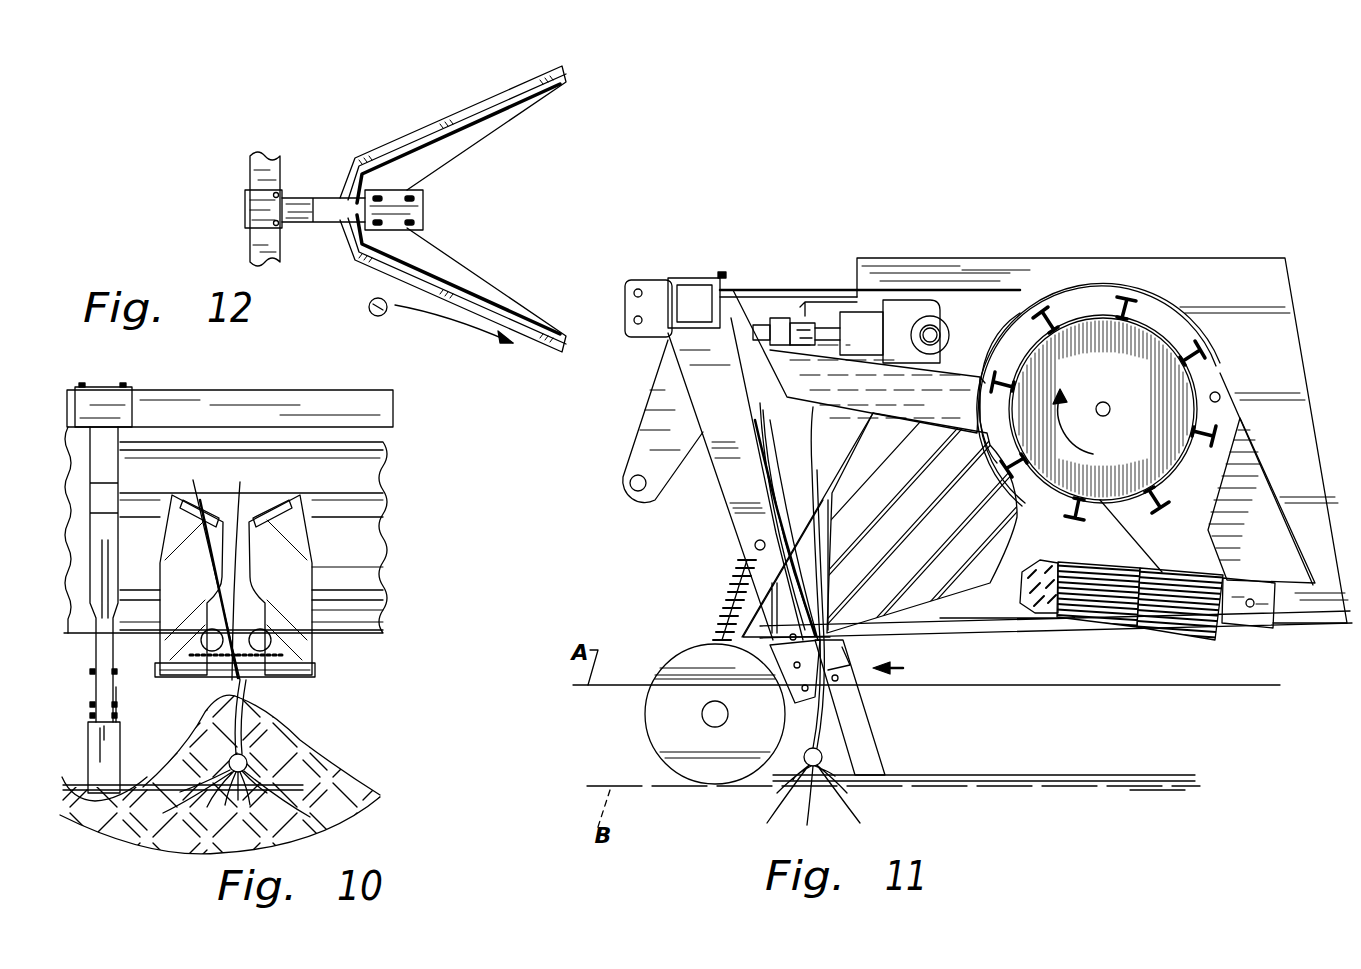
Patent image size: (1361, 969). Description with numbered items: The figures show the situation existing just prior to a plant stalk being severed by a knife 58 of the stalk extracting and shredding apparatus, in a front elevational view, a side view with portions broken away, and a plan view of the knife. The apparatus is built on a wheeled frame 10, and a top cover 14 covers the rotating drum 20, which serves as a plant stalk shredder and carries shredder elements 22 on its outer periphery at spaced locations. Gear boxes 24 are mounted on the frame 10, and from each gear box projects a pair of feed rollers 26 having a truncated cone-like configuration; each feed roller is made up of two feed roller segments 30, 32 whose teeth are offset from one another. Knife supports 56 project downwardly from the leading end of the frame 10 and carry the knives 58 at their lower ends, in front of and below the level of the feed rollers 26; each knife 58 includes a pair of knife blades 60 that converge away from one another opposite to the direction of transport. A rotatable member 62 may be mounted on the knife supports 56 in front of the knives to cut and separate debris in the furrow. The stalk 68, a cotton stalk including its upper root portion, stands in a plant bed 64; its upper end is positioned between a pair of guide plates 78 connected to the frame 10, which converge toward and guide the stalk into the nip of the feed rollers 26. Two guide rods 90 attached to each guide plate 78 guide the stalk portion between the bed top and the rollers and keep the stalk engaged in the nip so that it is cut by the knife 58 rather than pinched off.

In FIG. 12, the wheeled frame 10 is at (262, 175).
In FIG. 10, the wheeled frame 10 is at (250, 392).
In FIG. 11, the wheeled frame 10 is at (682, 300).
In FIG. 11, the top cover 14 is at (1172, 292).
In FIG. 11, the rotating drum 20 is at (1091, 320).
In FIG. 11, the shredder elements 22 is at (1050, 318).
In FIG. 11, the gear box 24 is at (1262, 614).
In FIG. 10, the feed rollers 26 is at (202, 665).
In FIG. 11, the feed rollers 26 is at (1087, 565).
In FIG. 11, the feed roller segment 30 is at (1090, 610).
In FIG. 11, the feed roller segment 32 is at (1167, 506).
In FIG. 12, the knife support 56 is at (405, 232).
In FIG. 10, the knife support 56 is at (100, 682).
In FIG. 11, the knife support 56 is at (832, 643).
In FIG. 10, the knife 58 is at (148, 800).
In FIG. 11, the knife 58 is at (1030, 775).
In FIG. 12, the knife blades 60 is at (522, 82).
In FIG. 11, the knife blades 60 is at (1128, 792).
In FIG. 11, the rotatable member 62 is at (700, 658).
In FIG. 10, the plant bed 64 is at (262, 726).
In FIG. 12, the stalk 68 is at (369, 305).
In FIG. 10, the stalk 68 is at (250, 745).
In FIG. 11, the stalk 68 is at (822, 728).
In FIG. 10, the guide plates 78 is at (185, 570).
In FIG. 11, the guide plates 78 is at (977, 548).
In FIG. 11, the guide rods 90 is at (977, 624).